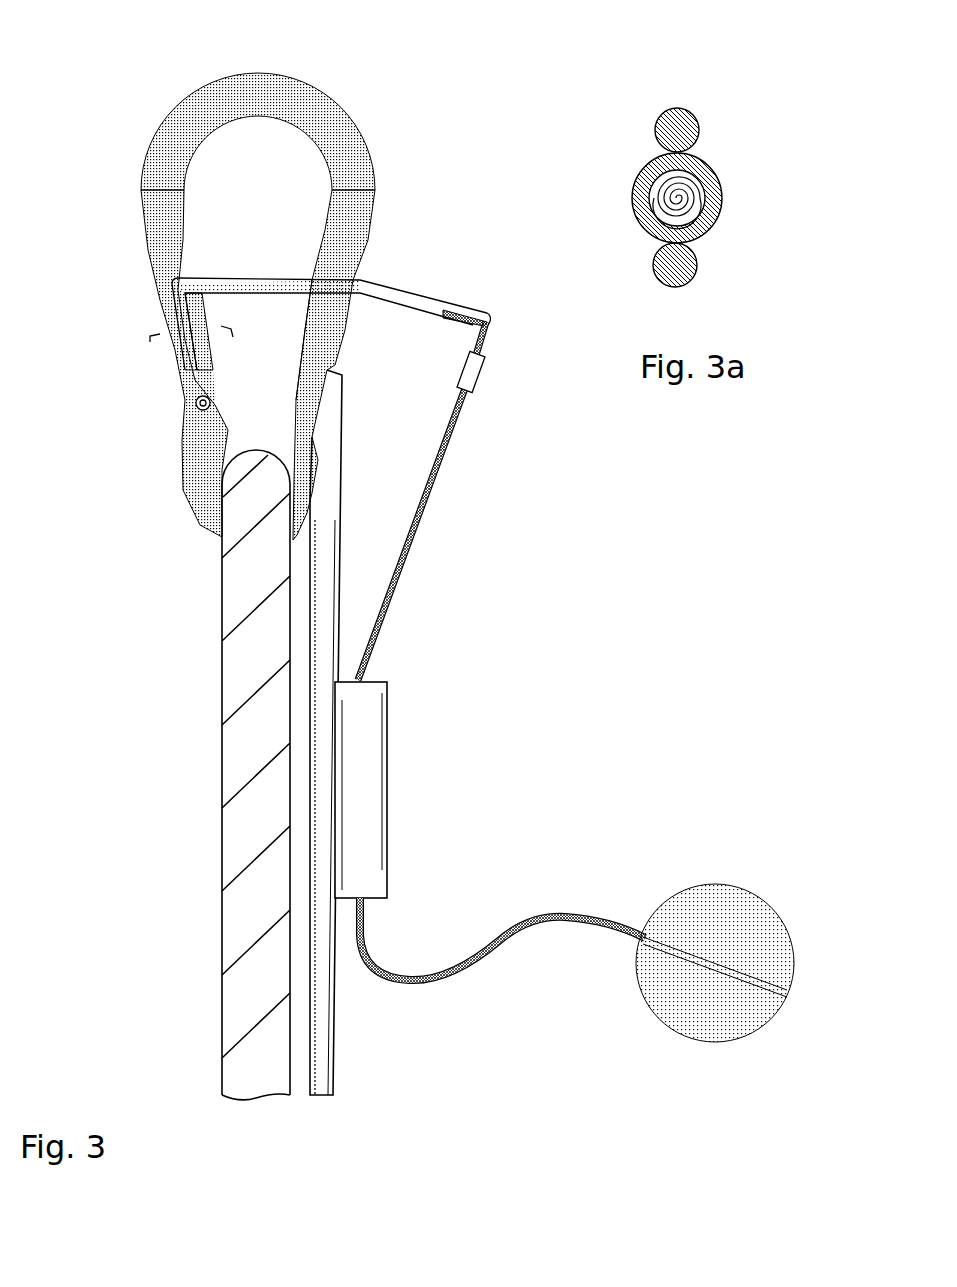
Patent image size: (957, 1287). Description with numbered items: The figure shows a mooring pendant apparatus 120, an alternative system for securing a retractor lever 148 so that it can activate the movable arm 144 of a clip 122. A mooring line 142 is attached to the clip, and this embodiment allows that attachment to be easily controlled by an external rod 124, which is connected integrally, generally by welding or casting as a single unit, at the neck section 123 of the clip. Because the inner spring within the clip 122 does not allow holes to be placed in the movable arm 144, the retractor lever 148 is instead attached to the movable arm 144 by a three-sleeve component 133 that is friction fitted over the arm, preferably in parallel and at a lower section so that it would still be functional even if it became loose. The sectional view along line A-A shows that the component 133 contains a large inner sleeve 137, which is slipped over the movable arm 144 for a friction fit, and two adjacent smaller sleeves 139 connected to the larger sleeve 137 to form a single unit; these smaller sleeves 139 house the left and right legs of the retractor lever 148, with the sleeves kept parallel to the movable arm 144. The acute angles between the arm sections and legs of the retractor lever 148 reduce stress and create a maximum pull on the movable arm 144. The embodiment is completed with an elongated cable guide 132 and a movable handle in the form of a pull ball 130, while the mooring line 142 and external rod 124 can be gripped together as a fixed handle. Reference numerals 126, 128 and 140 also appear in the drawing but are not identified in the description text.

In FIG. 3, the mooring pendant apparatus 120 is at (355, 57).
In FIG. 3, the clip 122 is at (386, 164).
In FIG. 3, the neck section 123 is at (350, 321).
In FIG. 3, the external rod 124 is at (345, 452).
In FIG. 3, the cord 126 is at (560, 921).
In FIG. 3, the cable 128 is at (416, 556).
In FIG. 3, the pull ball 130 is at (748, 892).
In FIG. 3, the elongated cable guide 132 is at (389, 795).
In FIG. 3, the three-sleeve component 133 is at (173, 378).
In FIG. 3A, the three-sleeve component 133 is at (722, 57).
In FIG. 3A, the large inner sleeve 137 is at (700, 190).
In FIG. 3A, the smaller sleeves 139 is at (700, 123).
In FIG. 3, the pivot 140 is at (194, 419).
In FIG. 3, the mooring line 142 is at (220, 795).
In FIG. 3, the movable arm 144 is at (158, 279).
In FIG. 3, the retractor lever 148 is at (424, 283).